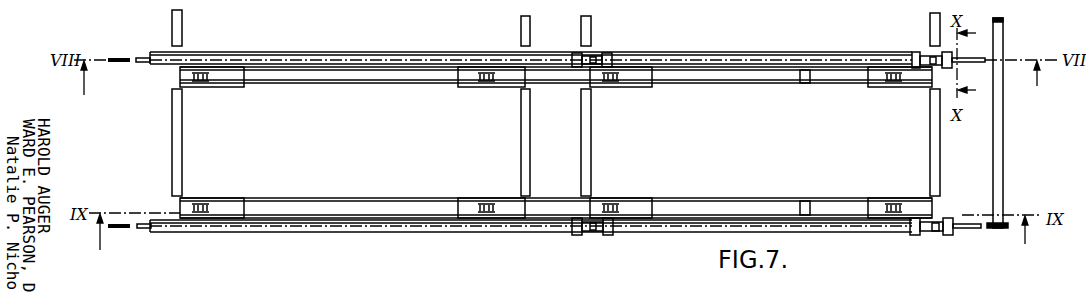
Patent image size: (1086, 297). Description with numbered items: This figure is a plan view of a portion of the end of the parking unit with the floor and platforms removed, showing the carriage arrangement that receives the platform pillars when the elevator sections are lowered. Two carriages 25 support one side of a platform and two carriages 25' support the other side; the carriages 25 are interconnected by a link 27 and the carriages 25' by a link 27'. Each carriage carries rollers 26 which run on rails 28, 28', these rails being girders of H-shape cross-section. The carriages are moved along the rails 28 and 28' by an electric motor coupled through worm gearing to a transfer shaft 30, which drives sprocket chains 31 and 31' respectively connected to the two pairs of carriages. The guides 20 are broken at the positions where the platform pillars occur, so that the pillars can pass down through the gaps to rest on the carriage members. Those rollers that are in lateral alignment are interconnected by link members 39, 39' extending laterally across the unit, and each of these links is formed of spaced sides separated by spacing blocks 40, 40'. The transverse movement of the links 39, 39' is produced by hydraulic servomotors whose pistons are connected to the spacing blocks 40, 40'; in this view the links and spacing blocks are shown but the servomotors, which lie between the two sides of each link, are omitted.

The guide 20 is at (182, 126).
The carriage 25 is at (762, 244).
The carriage 25' is at (762, 41).
The roller 26 is at (608, 55).
The link 27 is at (858, 241).
The link 27' is at (854, 46).
The rail 28 is at (728, 241).
The rail 28' is at (728, 46).
The transfer shaft 30 is at (1003, 119).
The sprocket chain 31 is at (552, 241).
The sprocket chain 31' is at (549, 58).
The link member 39 is at (556, 196).
The link member 39' is at (556, 89).
The spacing block 40 is at (814, 193).
The spacing block 40' is at (818, 91).